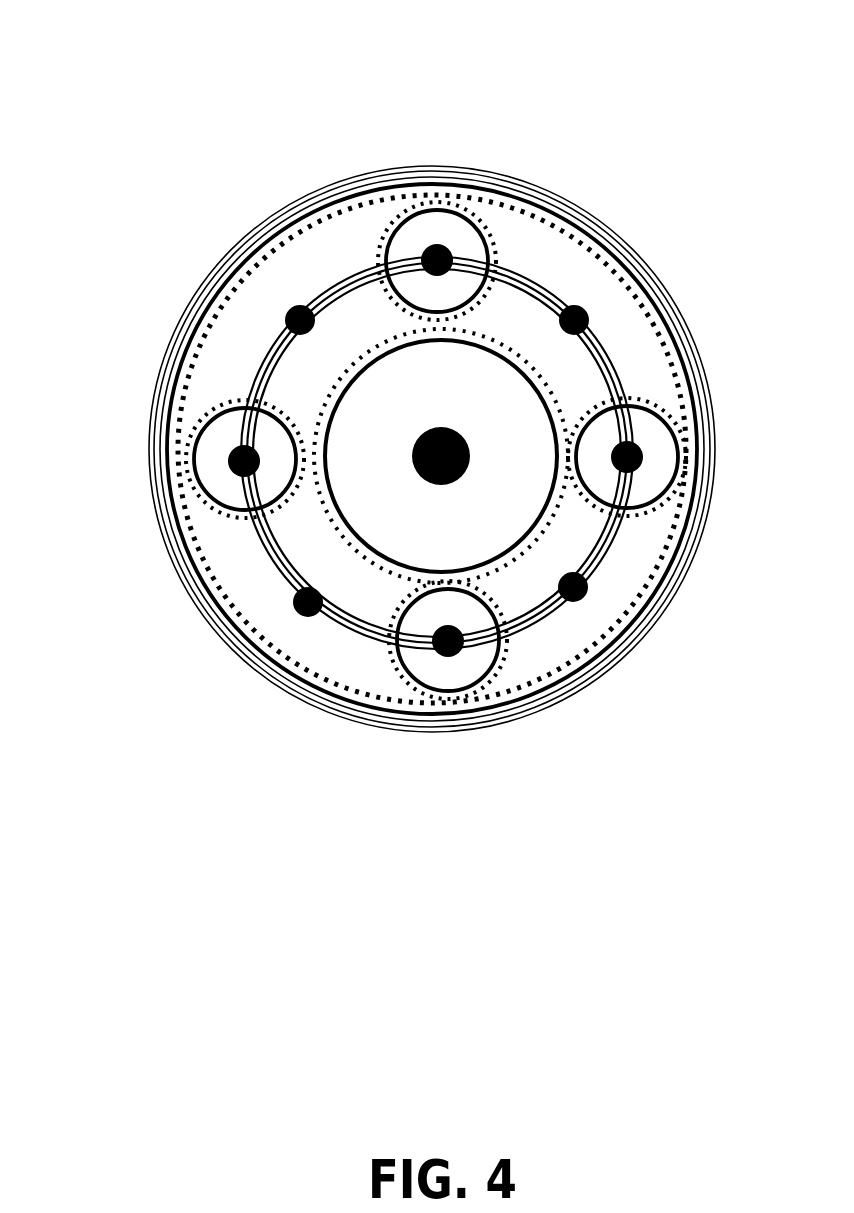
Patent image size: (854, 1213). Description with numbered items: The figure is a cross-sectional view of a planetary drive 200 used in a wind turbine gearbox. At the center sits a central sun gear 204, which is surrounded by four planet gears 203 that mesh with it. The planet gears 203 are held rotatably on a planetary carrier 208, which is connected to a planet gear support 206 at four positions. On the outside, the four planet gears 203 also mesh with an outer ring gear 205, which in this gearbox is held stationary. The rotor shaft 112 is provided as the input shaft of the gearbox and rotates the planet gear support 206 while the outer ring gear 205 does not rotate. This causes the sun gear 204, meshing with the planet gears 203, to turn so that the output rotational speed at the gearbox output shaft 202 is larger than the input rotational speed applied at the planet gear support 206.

The planetary drive 200 is at (750, 55).
The rotor shaft 112 is at (355, 178).
The outer ring gear 205 is at (257, 228).
The planetary carrier 208 is at (523, 278).
The planet gears 203 is at (443, 230).
The planet gear support 206 is at (285, 320).
The central sun gear 204 is at (340, 548).
The gearbox output shaft 202 is at (440, 435).